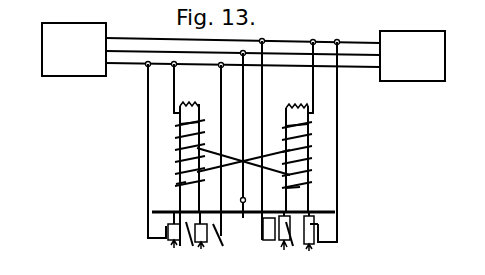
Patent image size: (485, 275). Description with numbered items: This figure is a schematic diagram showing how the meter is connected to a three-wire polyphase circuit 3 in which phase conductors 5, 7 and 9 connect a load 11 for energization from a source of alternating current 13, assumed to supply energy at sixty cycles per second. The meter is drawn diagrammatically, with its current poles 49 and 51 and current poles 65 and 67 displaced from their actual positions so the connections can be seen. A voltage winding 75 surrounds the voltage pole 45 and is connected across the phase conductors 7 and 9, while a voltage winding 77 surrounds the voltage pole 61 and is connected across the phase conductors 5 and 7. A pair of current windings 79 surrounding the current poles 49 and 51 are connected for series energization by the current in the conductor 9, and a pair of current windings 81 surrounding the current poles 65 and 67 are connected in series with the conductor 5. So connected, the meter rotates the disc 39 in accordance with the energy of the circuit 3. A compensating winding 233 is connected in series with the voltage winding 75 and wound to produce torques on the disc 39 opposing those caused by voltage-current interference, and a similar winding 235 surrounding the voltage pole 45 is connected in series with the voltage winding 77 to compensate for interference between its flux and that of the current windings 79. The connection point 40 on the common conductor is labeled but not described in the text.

The circuit 3 is at (345, 22).
The phase conductor 5 is at (264, 40).
The phase conductor 7 is at (294, 54).
The phase conductor 9 is at (285, 66).
The load 11 is at (411, 32).
The source of alternating current 13 is at (85, 23).
The disc 39 is at (154, 210).
The connection tap 40 is at (243, 218).
The voltage pole 45 is at (180, 159).
The current pole 49 is at (173, 247).
The current pole 51 is at (206, 247).
The voltage pole 61 is at (300, 163).
The current pole 65 is at (284, 249).
The current pole 67 is at (312, 247).
The voltage winding 75 is at (180, 124).
The voltage winding 77 is at (287, 125).
The current windings 79 is at (164, 233).
The current windings 81 is at (346, 232).
The winding 233 is at (305, 189).
The winding 235 is at (176, 182).